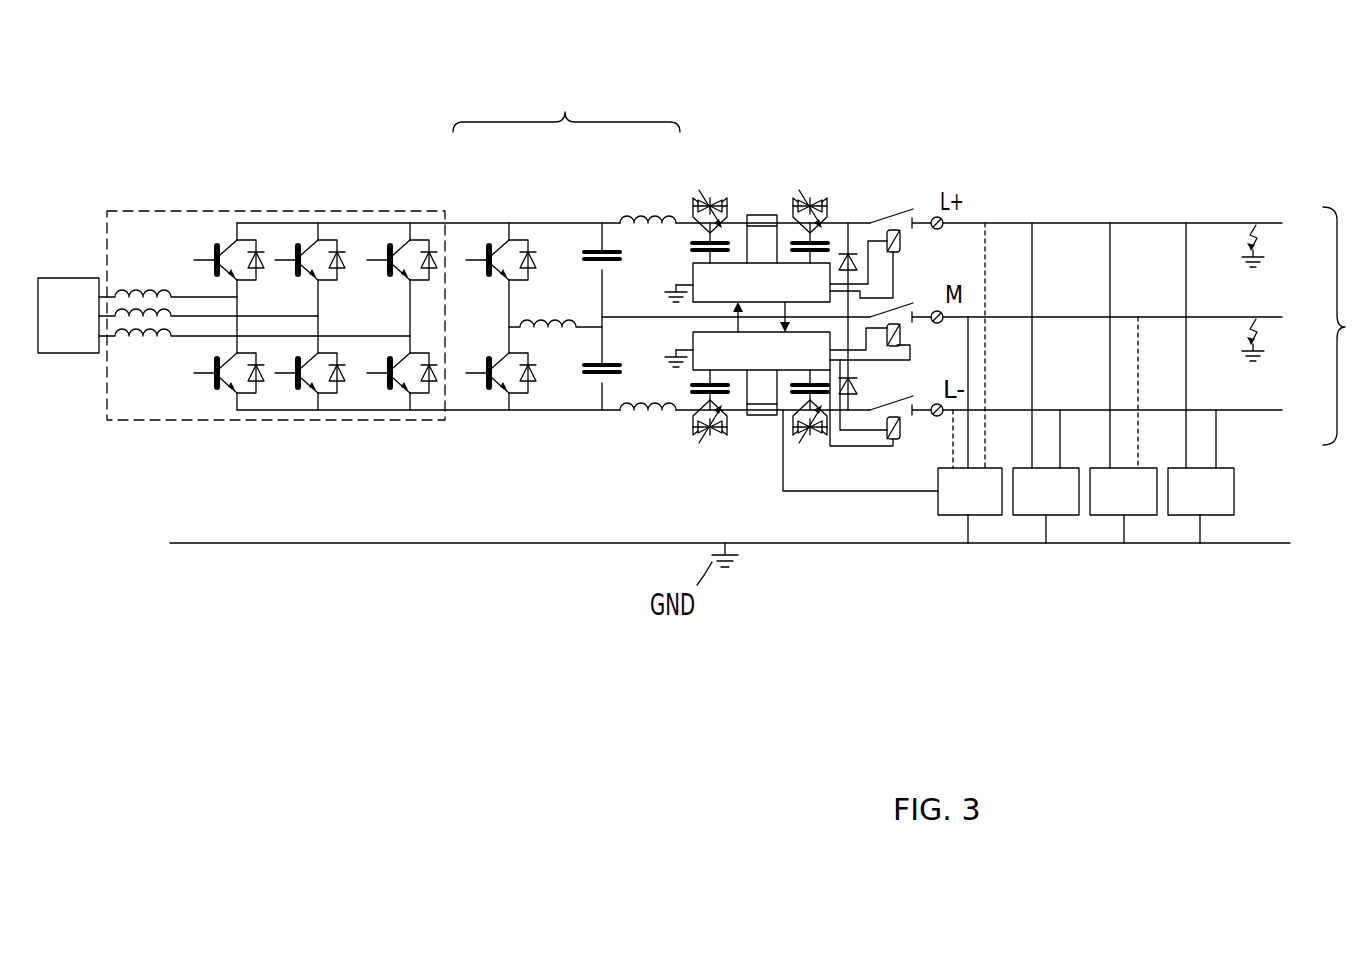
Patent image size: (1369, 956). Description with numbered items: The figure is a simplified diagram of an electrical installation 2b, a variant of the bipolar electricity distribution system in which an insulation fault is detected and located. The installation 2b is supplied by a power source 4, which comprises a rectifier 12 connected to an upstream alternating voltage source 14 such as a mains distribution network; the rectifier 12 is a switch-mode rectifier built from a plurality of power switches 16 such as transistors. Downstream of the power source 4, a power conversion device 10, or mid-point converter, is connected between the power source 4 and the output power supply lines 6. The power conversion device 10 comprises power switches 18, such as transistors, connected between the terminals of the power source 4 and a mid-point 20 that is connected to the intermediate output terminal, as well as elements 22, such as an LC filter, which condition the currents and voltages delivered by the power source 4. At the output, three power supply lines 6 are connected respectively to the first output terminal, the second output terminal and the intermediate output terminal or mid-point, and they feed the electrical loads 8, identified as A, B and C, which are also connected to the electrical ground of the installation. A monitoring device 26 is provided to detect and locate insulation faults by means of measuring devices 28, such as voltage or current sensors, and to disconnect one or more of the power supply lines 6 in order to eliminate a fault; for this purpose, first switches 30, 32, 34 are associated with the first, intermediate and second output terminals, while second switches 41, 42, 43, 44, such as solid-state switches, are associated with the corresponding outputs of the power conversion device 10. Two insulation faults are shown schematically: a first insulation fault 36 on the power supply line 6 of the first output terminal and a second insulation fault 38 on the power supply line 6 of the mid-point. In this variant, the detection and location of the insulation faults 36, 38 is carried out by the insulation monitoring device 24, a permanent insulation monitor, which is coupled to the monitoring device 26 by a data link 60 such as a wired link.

The electrical installation 2b is at (962, 329).
The power source 4 is at (201, 160).
The power supply lines 6 is at (1154, 326).
The electrical loads 8 is at (1063, 515).
The power conversion device 10 is at (566, 272).
The rectifier 12 is at (315, 329).
The alternating voltage source 14 is at (67, 338).
The power switches 16 is at (266, 405).
The power switches 18 is at (492, 226).
The mid-point 20 is at (640, 398).
The conditioning elements 22 is at (620, 218).
The insulation monitoring device 24 is at (990, 515).
The monitoring device 26 is at (680, 215).
The measuring devices 28 is at (765, 430).
The first switch 30 is at (887, 205).
The first switch 32 is at (935, 285).
The first switch 34 is at (912, 448).
The first insulation fault 36 is at (1262, 236).
The second insulation fault 38 is at (1262, 331).
The second switch 41 is at (712, 188).
The second switch 42 is at (812, 193).
The second switch 43 is at (710, 440).
The second switch 44 is at (815, 440).
The data link 60 is at (830, 495).